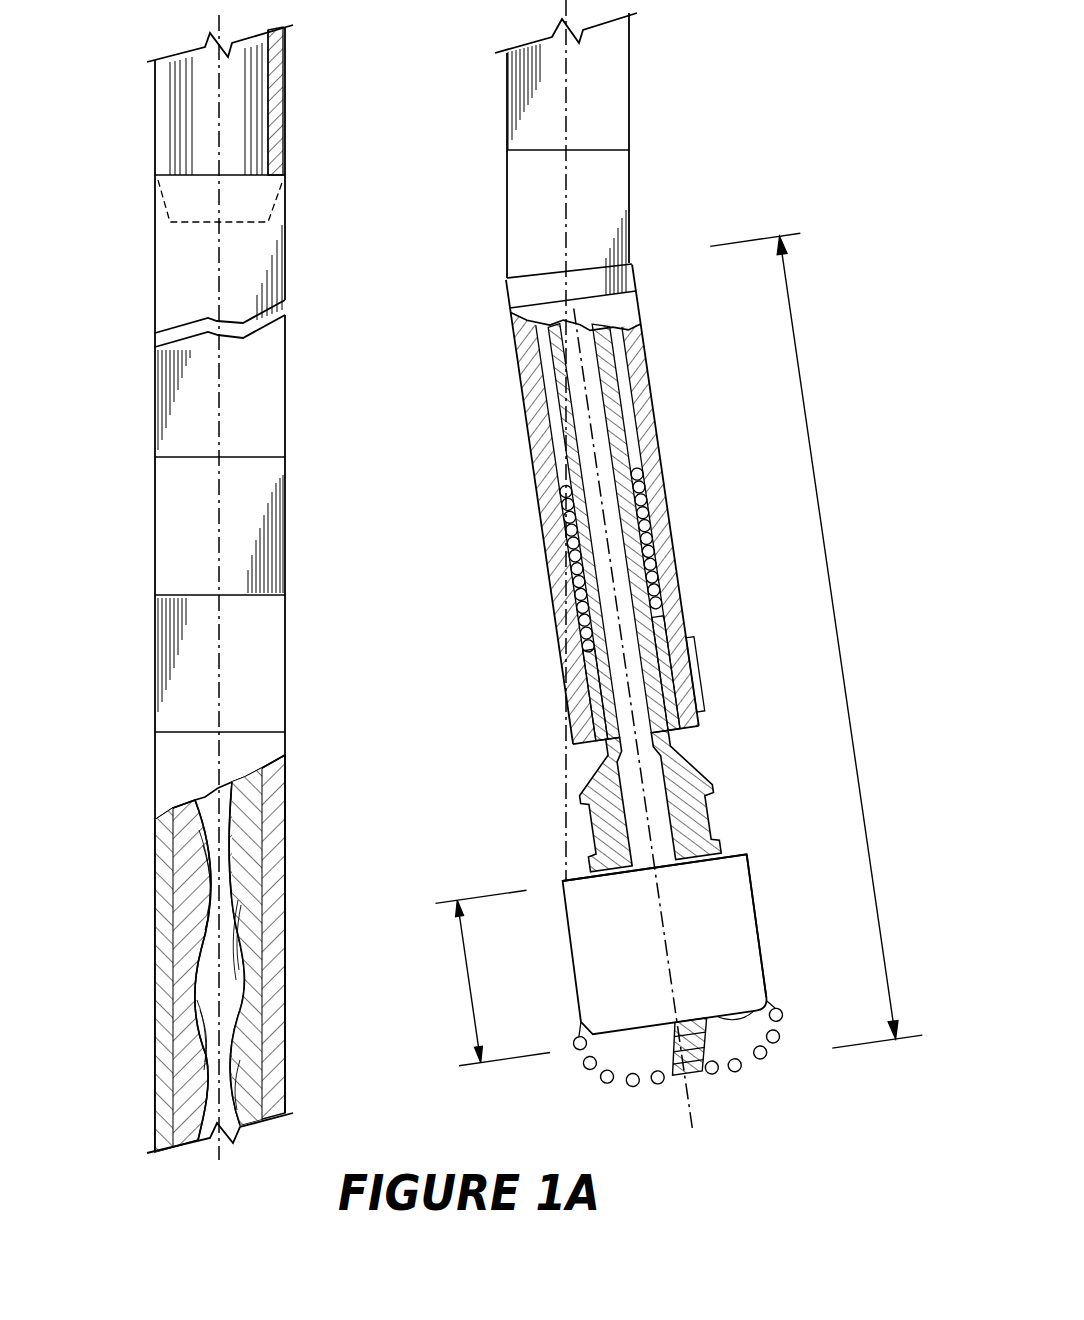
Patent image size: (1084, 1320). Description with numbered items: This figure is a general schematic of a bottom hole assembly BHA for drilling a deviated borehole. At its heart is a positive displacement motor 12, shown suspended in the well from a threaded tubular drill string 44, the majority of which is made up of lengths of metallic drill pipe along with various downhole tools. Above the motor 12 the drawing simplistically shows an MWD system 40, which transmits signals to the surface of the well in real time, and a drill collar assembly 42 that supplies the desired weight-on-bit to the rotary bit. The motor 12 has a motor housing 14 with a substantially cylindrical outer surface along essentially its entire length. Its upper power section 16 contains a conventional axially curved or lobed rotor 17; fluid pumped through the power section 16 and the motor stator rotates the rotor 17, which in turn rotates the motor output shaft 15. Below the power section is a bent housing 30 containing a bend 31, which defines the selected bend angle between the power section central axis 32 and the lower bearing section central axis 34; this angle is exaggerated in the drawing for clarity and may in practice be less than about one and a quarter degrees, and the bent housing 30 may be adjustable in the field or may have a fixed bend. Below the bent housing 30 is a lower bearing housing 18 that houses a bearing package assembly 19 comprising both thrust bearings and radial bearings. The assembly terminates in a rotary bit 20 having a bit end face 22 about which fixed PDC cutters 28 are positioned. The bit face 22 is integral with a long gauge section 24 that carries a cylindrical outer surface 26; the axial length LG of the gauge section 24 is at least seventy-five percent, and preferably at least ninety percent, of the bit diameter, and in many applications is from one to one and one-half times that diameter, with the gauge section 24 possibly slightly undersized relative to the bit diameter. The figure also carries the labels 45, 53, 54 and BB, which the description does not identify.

The positive displacement motor 12 is at (190, 767).
The motor housing 14 is at (286, 807).
The motor output shaft 15 is at (623, 428).
The upper power section 16 is at (277, 1078).
The lobed rotor 17 is at (230, 946).
The lower bearing housing 18 is at (673, 553).
The bearing package assembly 19 is at (670, 618).
The rotary bit 20 is at (809, 997).
The bit end face 22 is at (693, 1076).
The long gauge section 24 is at (733, 873).
The cylindrical outer surface 26 is at (762, 935).
The fixed PDC cutters 28 is at (770, 1060).
The bent housing 30 is at (536, 228).
The bend 31 is at (583, 267).
The power section central axis 32 is at (567, 75).
The lower bearing section central axis 34 is at (690, 1110).
The MWD system 40 is at (204, 540).
The drill collar assembly 42 is at (269, 413).
The drill string 44 is at (288, 75).
The drill string section 45 is at (267, 685).
The threaded pin connection 53 is at (607, 799).
The threaded pin connection 54 is at (690, 808).
The bottom hole assembly BHA is at (303, 750).
The axial length of the gauge section LG is at (492, 977).
The bit to bend distance BB is at (816, 640).